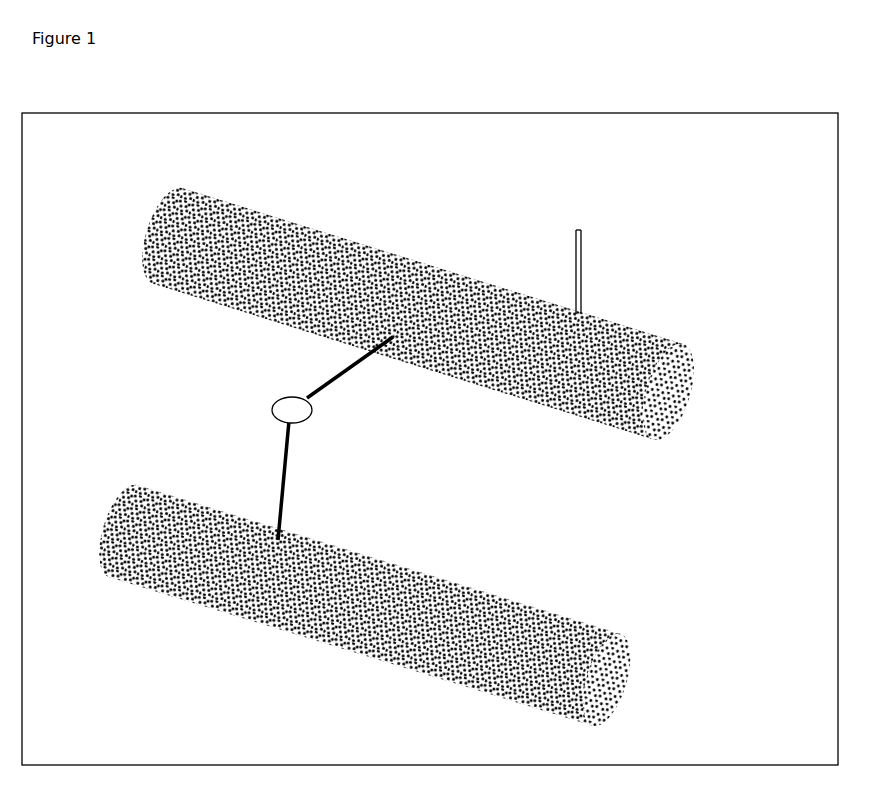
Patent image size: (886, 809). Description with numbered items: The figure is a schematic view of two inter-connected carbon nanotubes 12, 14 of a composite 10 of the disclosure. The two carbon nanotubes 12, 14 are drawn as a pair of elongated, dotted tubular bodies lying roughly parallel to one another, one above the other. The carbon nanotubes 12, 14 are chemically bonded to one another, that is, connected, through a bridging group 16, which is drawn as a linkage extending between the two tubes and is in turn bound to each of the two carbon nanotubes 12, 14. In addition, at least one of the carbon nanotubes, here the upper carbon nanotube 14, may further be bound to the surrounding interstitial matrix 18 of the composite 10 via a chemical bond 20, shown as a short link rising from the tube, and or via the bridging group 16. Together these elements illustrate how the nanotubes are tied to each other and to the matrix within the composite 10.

The composite 10 is at (544, 79).
The carbon nanotube 12 is at (586, 638).
The carbon nanotube 14 is at (656, 338).
The bridging group 16 is at (312, 418).
The interstitial matrix 18 is at (729, 469).
The chemical bond 20 is at (581, 258).